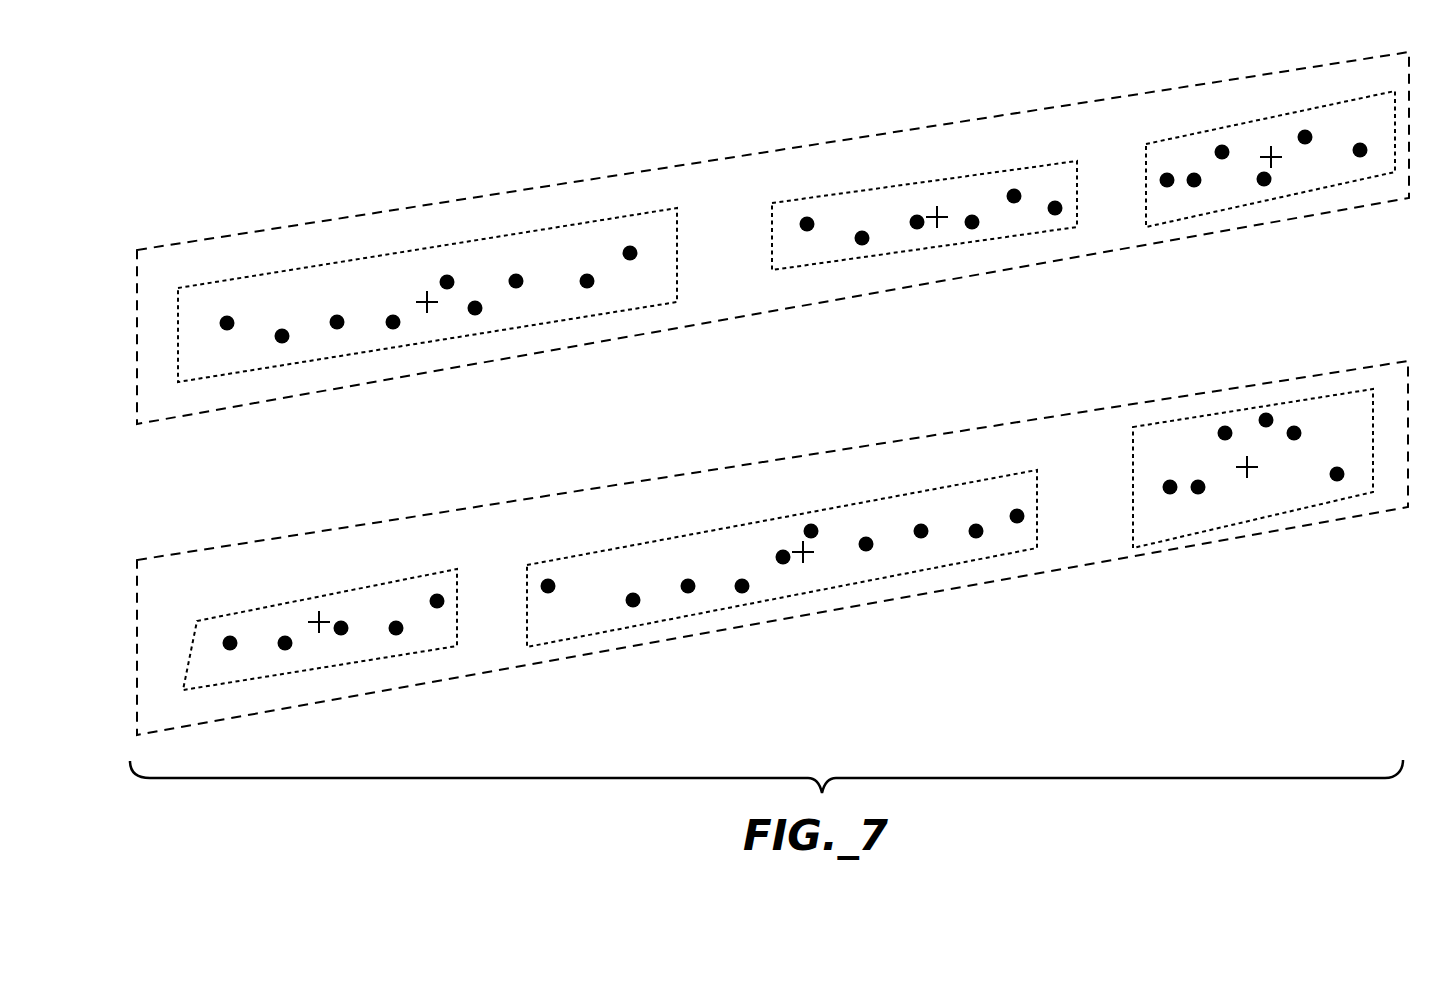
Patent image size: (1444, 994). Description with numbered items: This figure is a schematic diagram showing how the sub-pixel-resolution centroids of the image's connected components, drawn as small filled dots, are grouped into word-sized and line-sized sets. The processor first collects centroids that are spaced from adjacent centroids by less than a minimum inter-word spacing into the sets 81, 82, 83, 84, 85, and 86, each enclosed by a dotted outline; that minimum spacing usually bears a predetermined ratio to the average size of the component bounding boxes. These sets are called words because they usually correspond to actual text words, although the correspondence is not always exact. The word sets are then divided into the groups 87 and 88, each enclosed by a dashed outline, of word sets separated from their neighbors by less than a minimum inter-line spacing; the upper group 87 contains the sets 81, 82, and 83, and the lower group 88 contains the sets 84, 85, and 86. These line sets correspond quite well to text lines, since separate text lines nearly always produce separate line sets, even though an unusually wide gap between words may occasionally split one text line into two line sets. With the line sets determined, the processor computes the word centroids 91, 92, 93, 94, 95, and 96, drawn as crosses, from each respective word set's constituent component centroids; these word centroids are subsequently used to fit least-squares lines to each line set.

The word set 81 is at (657, 208).
The word set 82 is at (1045, 163).
The word set 83 is at (1307, 110).
The word set 84 is at (430, 572).
The word set 85 is at (1018, 472).
The word set 86 is at (1355, 388).
The line set 87 is at (1112, 253).
The line set 88 is at (1082, 565).
The word centroid 91 is at (420, 301).
The word centroid 92 is at (930, 217).
The word centroid 93 is at (1262, 156).
The word centroid 94 is at (316, 621).
The word centroid 95 is at (796, 551).
The word centroid 96 is at (1240, 466).